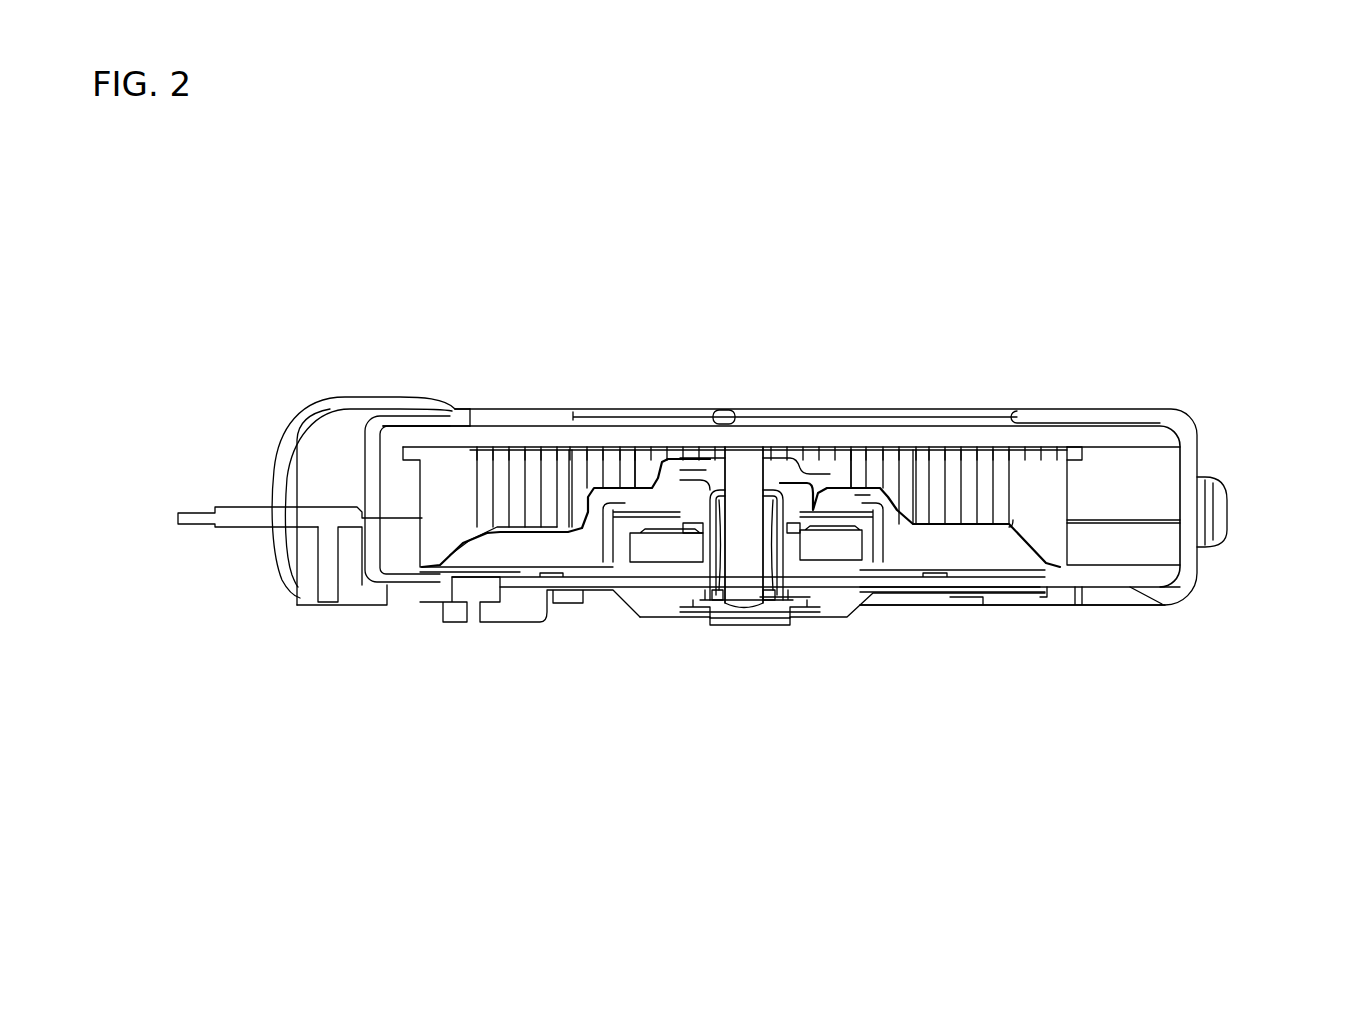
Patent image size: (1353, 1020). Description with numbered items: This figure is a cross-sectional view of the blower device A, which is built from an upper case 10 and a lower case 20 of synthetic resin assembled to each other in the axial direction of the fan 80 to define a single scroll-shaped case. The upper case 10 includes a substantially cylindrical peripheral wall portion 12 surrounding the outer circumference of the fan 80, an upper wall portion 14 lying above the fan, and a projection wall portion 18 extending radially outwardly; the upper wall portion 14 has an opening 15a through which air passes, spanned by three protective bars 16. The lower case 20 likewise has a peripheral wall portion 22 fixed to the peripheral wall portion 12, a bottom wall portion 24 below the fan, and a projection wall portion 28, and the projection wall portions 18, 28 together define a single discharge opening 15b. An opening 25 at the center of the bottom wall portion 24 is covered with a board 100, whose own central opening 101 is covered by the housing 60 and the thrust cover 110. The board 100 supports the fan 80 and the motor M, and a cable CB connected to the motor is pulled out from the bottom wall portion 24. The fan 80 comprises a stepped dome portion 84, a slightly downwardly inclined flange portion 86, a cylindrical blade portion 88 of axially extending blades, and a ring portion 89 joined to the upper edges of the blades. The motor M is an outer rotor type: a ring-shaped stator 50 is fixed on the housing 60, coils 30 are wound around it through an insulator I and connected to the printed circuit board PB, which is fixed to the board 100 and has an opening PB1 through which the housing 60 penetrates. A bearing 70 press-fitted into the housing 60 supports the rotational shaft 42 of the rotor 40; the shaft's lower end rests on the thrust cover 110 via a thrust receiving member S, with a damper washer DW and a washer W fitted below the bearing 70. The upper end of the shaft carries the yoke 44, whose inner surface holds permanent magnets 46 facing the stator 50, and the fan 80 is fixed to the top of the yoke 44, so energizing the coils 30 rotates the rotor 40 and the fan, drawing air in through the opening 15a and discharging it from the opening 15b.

The upper case 10 is at (1140, 411).
The peripheral wall portion 12 is at (1200, 460).
The upper wall portion 14 is at (1057, 409).
The opening 15a is at (473, 417).
The opening 15b is at (332, 467).
The bars 16 is at (618, 417).
The projection wall portion 18 is at (366, 400).
The lower case 20 is at (1164, 605).
The peripheral wall portion 22 is at (1197, 596).
The bottom wall portion 24 is at (1098, 607).
The opening 25 is at (1030, 597).
The projection wall portion 28 is at (278, 567).
The coils 30 is at (595, 575).
The rotor 40 is at (878, 505).
The rotational shaft 42 is at (755, 432).
The yoke 44 is at (667, 432).
The permanent magnets 46 is at (610, 597).
The stator 50 is at (622, 543).
The housing 60 is at (822, 585).
The bearing 70 is at (727, 587).
The fan 80 is at (1083, 455).
The dome portion 84 is at (812, 527).
The flange portion 86 is at (430, 580).
The blade portion 88 is at (960, 470).
The ring portion 89 is at (1073, 480).
The board 100 is at (643, 620).
The opening 101 is at (782, 598).
The thrust cover 110 is at (793, 613).
The blower device A is at (1075, 312).
The cable CB is at (188, 522).
The damper washer DW is at (722, 593).
The insulator I is at (860, 500).
The motor M is at (762, 462).
The printed circuit board PB is at (1053, 595).
The opening PB1 is at (797, 593).
The thrust receiving member S is at (740, 607).
The washer W is at (718, 593).